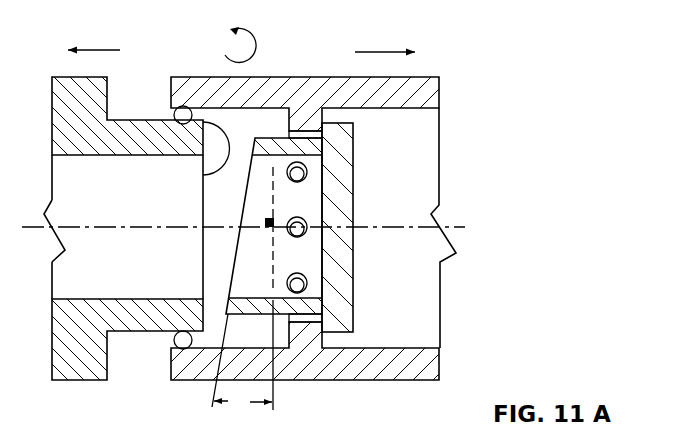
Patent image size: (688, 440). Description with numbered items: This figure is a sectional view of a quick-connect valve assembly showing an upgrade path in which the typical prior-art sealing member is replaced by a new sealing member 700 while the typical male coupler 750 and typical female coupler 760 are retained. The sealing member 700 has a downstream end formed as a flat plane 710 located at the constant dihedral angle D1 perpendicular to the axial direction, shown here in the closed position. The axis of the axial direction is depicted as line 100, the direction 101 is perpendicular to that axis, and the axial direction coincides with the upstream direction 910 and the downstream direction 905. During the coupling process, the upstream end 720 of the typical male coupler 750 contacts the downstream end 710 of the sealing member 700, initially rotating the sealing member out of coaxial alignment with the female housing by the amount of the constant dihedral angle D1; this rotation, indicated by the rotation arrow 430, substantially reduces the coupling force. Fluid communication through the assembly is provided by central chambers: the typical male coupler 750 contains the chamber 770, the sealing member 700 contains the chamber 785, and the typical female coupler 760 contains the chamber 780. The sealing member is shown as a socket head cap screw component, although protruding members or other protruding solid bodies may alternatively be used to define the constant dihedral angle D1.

The axial axis 100 is at (40, 231).
The perpendicular direction 101 is at (275, 390).
The rotation direction 430 is at (240, 44).
The sealing member 700 is at (345, 161).
The flat plane 710 is at (233, 268).
The upstream end 720 is at (204, 177).
The typical male coupler 750 is at (138, 228).
The typical female coupler 760 is at (312, 228).
The central chamber of male coupler 770 is at (106, 215).
The central chamber of female coupler 780 is at (408, 216).
The central chamber of sealing member 785 is at (287, 268).
The downstream direction 905 is at (94, 50).
The upstream direction 910 is at (388, 52).
The constant dihedral angle D1 is at (242, 363).